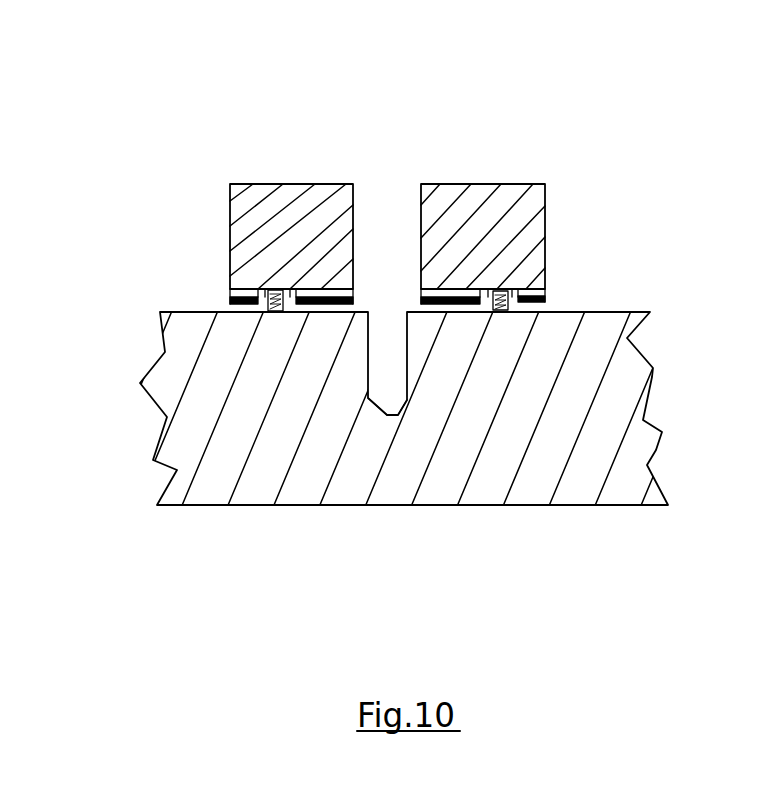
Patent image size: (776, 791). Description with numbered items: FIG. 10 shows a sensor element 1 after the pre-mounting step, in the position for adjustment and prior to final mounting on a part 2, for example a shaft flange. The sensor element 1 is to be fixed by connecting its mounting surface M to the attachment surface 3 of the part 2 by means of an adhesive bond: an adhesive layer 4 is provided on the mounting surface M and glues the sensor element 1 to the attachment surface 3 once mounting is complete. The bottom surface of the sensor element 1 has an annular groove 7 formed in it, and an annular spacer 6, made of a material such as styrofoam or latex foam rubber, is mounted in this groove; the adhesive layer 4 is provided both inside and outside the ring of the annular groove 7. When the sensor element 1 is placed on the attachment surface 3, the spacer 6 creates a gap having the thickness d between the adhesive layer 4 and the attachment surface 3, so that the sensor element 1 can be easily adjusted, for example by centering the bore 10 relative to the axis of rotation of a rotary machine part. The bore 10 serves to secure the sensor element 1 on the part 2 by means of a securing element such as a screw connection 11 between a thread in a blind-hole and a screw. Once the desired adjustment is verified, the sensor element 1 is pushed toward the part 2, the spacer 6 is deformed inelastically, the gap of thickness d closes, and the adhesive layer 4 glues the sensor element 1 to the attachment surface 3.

The sensor element 1 is at (288, 184).
The part 2 is at (625, 433).
The attachment surface 3 is at (247, 313).
The adhesive layer 4 is at (243, 297).
The spacer 6 is at (520, 296).
The annular groove 7 is at (262, 296).
The bore 10 is at (403, 183).
The screw connection 11 is at (395, 388).
The mounting surface M is at (330, 300).
The gap thickness d is at (100, 263).